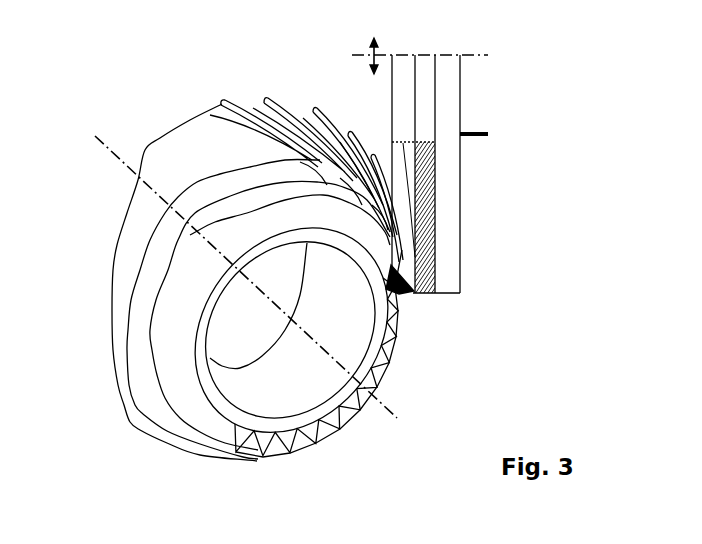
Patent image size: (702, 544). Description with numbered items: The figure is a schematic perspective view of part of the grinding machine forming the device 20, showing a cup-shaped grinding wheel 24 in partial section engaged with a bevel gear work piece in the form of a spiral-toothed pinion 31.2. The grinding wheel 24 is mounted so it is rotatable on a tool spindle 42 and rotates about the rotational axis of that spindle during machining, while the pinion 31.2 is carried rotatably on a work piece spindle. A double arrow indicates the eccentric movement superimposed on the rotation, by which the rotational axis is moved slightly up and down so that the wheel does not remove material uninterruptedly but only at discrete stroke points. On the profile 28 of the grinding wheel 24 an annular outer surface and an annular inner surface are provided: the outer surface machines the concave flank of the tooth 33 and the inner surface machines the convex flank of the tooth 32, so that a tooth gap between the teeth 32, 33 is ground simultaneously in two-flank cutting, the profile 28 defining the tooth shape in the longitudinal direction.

The device 20 is at (595, 81).
The grinding wheel 24 is at (462, 190).
The profile 28 is at (413, 282).
The spiral-toothed pinion 31.2 is at (143, 422).
The tooth 32 is at (390, 267).
The tooth 33 is at (403, 300).
The tool spindle 42 is at (488, 134).